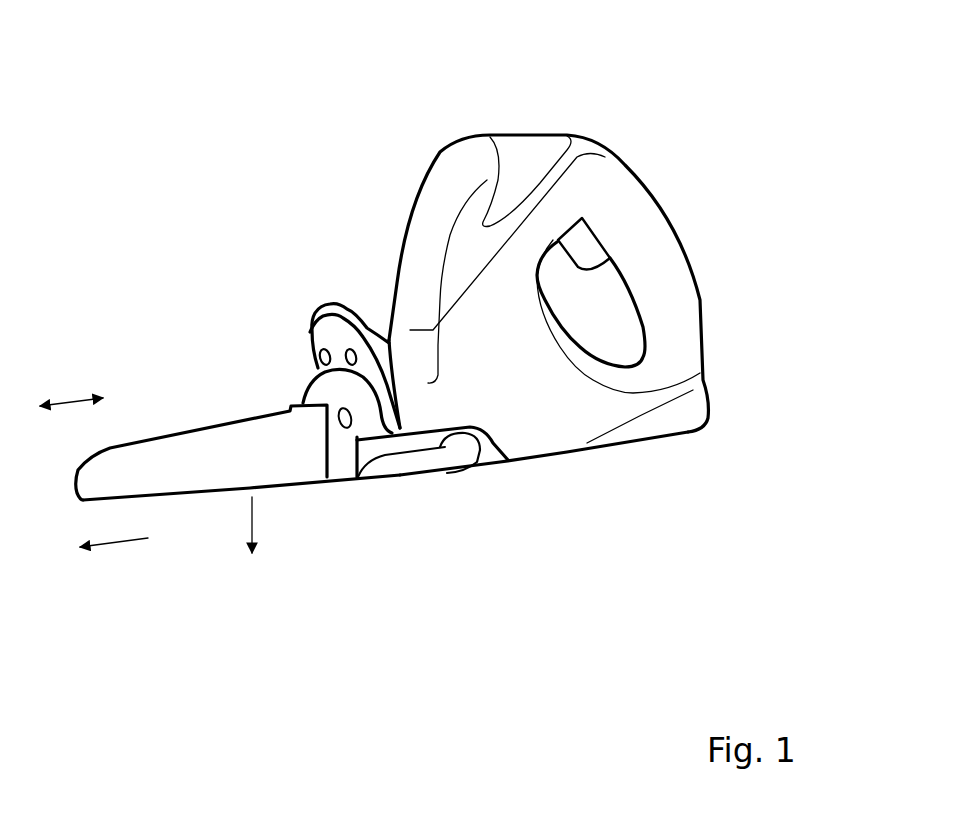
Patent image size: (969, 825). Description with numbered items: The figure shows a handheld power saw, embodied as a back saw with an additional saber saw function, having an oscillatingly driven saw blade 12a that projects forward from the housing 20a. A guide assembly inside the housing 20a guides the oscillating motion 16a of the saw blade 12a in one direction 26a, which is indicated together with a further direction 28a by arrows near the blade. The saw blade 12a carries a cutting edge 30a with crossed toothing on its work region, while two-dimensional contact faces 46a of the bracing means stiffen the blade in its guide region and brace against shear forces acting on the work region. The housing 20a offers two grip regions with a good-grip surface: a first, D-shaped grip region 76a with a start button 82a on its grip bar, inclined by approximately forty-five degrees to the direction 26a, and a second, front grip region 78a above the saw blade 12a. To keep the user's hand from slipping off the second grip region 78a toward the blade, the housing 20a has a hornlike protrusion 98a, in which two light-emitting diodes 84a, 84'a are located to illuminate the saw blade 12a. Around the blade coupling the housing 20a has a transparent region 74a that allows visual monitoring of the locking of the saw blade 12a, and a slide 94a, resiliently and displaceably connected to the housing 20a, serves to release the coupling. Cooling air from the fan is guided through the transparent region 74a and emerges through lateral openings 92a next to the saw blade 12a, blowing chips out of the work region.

The saw blade 12a is at (186, 452).
The oscillating motion 16a is at (72, 398).
The housing 20a is at (543, 390).
The direction 26a is at (103, 547).
The direction 28a is at (252, 517).
The cutting edge 30a is at (197, 490).
The contact face 46a is at (223, 447).
The transparent region 74a is at (413, 443).
The first grip region 76a is at (653, 273).
The second grip region 78a is at (420, 283).
The start button 82a is at (617, 237).
The light-emitting diode 84a is at (305, 335).
The light-emitting diode 84'a is at (272, 285).
The lateral opening 92a is at (340, 432).
The slide 94a is at (457, 453).
The hornlike protrusion 98a is at (343, 310).